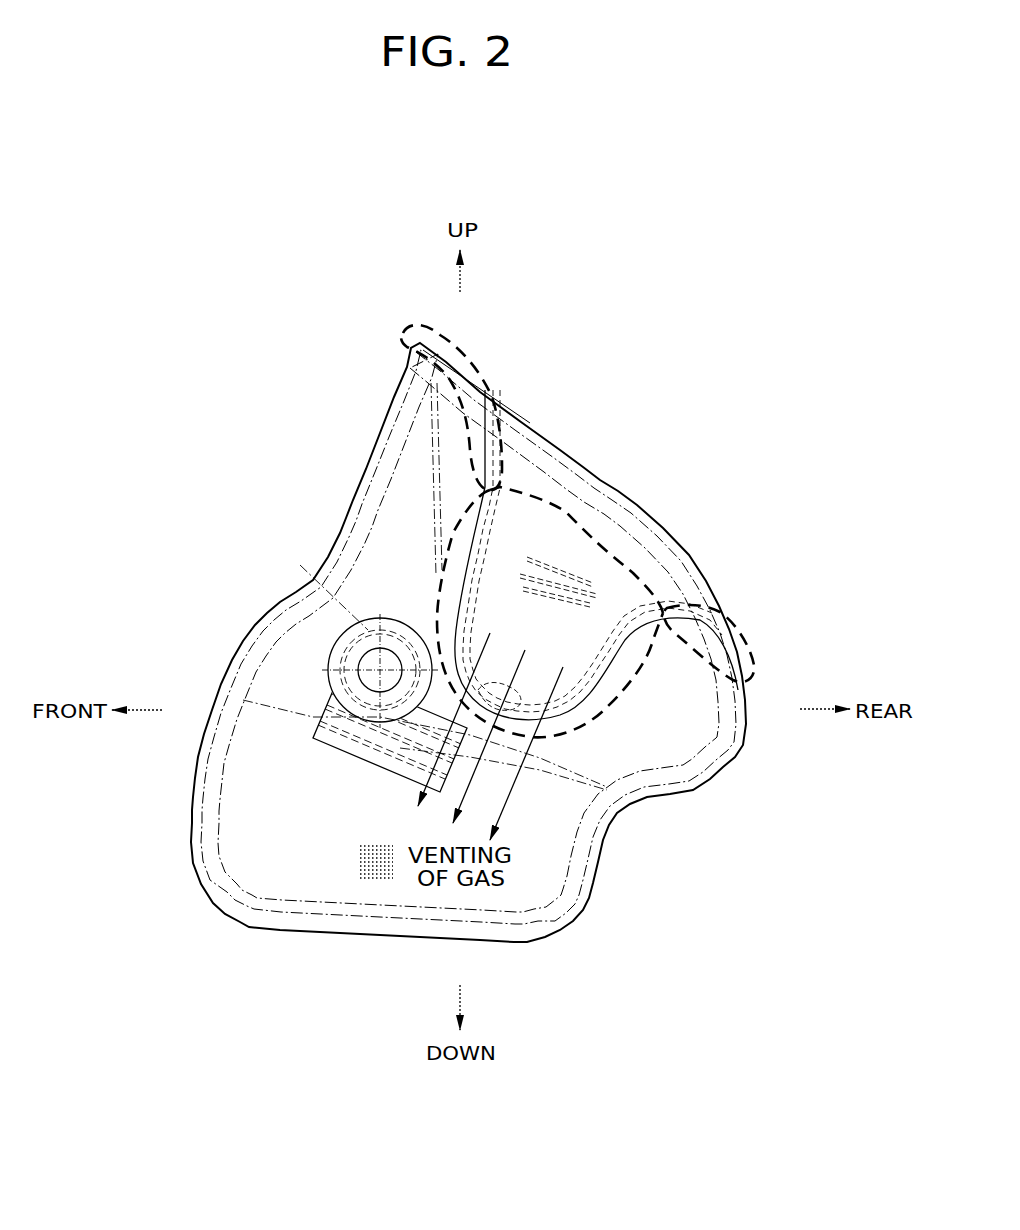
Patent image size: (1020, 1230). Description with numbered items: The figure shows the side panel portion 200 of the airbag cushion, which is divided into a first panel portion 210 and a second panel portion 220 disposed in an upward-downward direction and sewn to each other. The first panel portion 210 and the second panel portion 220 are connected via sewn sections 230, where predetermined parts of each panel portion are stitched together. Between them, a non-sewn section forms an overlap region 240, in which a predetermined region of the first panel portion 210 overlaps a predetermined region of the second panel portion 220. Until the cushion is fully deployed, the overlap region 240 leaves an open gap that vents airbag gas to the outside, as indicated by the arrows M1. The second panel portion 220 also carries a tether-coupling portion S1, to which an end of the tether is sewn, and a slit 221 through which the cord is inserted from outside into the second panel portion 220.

The side panel portion 200 is at (250, 620).
The first panel portion 210 is at (627, 550).
The second panel portion 220 is at (260, 825).
The slit 221 is at (535, 675).
The sewn sections 230 is at (472, 337).
The overlap region 240 is at (450, 543).
The tether-coupling portion S1 is at (562, 580).
The arrows M1 is at (490, 736).